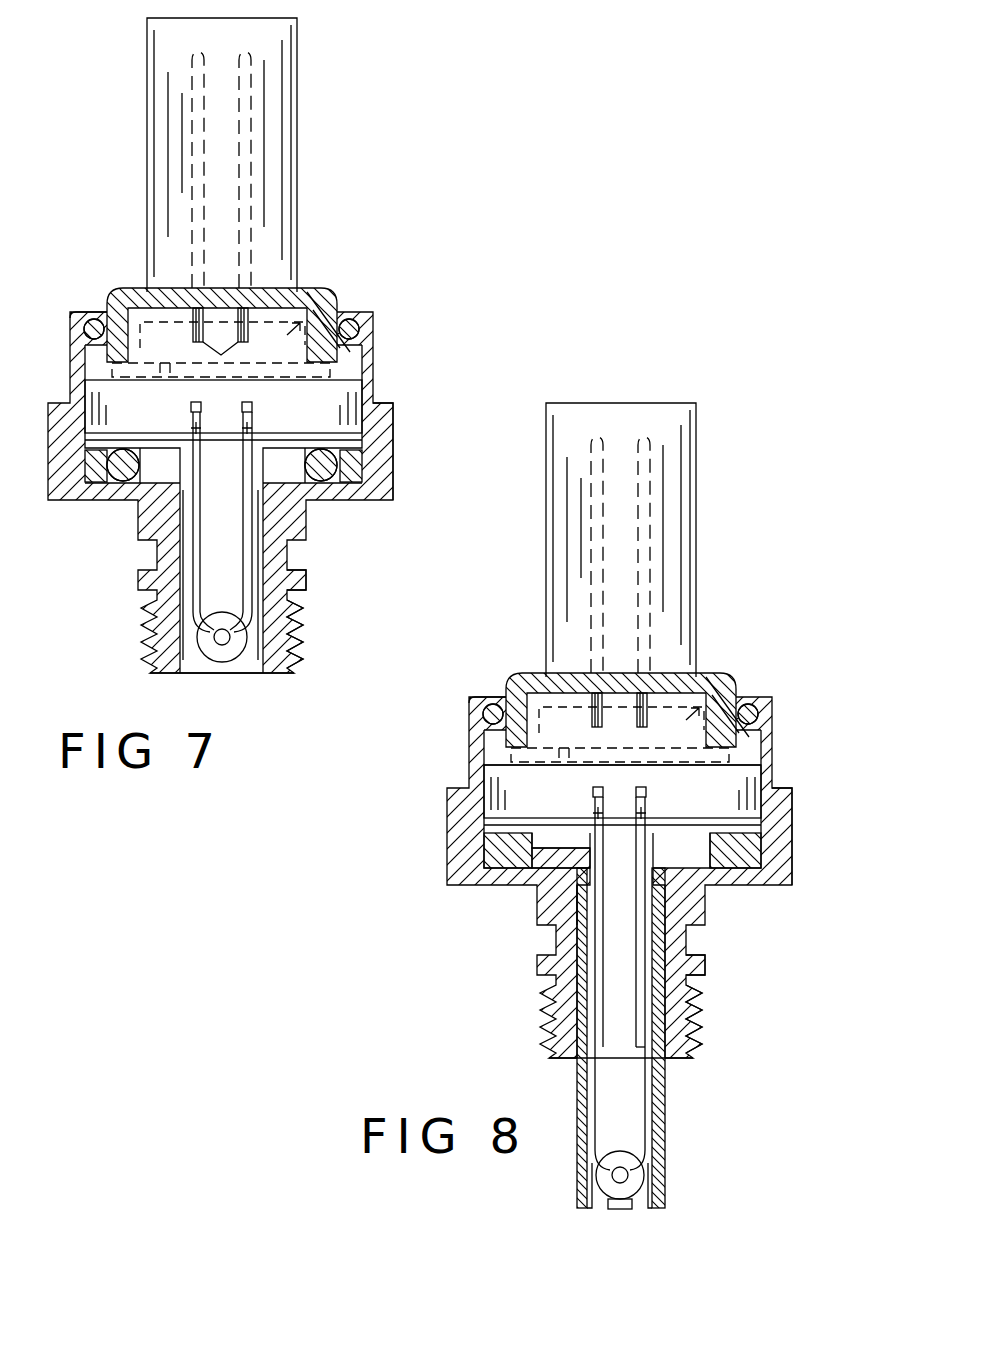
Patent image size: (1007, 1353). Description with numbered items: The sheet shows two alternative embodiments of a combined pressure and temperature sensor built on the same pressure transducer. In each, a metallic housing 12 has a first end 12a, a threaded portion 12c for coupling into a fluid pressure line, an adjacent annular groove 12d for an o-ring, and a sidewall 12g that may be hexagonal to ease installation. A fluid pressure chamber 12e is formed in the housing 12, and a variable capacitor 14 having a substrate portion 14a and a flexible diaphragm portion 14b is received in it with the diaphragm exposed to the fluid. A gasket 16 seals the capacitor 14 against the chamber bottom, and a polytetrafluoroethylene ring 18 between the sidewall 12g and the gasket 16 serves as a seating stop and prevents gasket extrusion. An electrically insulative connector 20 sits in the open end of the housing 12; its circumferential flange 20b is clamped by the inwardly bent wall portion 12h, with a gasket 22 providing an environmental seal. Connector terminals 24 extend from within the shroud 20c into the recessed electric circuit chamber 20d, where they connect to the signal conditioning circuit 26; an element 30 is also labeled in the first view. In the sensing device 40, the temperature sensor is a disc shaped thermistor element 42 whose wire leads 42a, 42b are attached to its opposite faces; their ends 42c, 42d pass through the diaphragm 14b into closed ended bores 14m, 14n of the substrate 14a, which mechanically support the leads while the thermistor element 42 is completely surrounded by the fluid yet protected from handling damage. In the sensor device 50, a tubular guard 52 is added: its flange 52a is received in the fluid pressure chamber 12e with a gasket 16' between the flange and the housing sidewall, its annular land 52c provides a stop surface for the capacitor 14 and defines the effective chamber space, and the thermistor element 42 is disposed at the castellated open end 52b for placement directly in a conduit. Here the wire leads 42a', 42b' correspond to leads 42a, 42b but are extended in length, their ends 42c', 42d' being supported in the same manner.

In FIG. 7, the housing 12 is at (374, 383).
In FIG. 8, the housing 12 is at (776, 768).
In FIG. 7, the first end 12a is at (267, 673).
In FIG. 8, the first end 12a is at (668, 1060).
In FIG. 7, the threaded portion 12c is at (298, 632).
In FIG. 8, the threaded portion 12c is at (695, 1003).
In FIG. 7, the annular groove 12d is at (290, 557).
In FIG. 8, the annular groove 12d is at (692, 942).
In FIG. 8, the fluid pressure chamber 12e is at (508, 840).
In FIG. 7, the sidewall 12g is at (375, 432).
In FIG. 8, the sidewall 12g is at (777, 818).
In FIG. 7, the inwardly bent wall portion 12h is at (77, 323).
In FIG. 8, the inwardly bent wall portion 12h is at (477, 712).
In FIG. 8, the variable capacitor 14 is at (622, 795).
In FIG. 8, the substrate portion 14a is at (515, 798).
In FIG. 8, the flexible diaphragm portion 14b is at (515, 823).
In FIG. 7, the closed ended bore 14m is at (258, 405).
In FIG. 8, the closed ended bore 14m is at (652, 790).
In FIG. 7, the closed ended bore 14n is at (187, 405).
In FIG. 8, the closed ended bore 14n is at (593, 793).
In FIG. 7, the gasket 16 is at (208, 493).
In FIG. 8, the gasket 16 is at (493, 878).
In FIG. 8, the gasket 16' is at (786, 842).
In FIG. 7, the ring 18 is at (347, 468).
In FIG. 7, the connector 20 is at (297, 182).
In FIG. 8, the connector 20 is at (697, 567).
In FIG. 7, the circumferential flange 20b is at (350, 347).
In FIG. 8, the circumferential flange 20b is at (752, 735).
In FIG. 7, the shroud 20c is at (275, 103).
In FIG. 8, the shroud 20c is at (673, 490).
In FIG. 7, the recessed electric circuit chamber 20d is at (313, 313).
In FIG. 8, the recessed electric circuit chamber 20d is at (705, 702).
In FIG. 7, the gasket 22 is at (86, 322).
In FIG. 8, the gasket 22 is at (487, 707).
In FIG. 7, the connector terminals 24 is at (222, 340).
In FIG. 8, the signal conditioning circuit 26 is at (485, 768).
In FIG. 7, the circuit element 30 is at (122, 363).
In FIG. 7, the combined pressure and temperature sensing device 40 is at (388, 213).
In FIG. 7, the thermistor element 42 is at (217, 643).
In FIG. 8, the thermistor element 42 is at (610, 1187).
In FIG. 7, the wire lead 42a is at (298, 522).
In FIG. 8, the wire lead 42a is at (679, 1091).
In FIG. 8, the wire lead 42a' is at (699, 983).
In FIG. 7, the wire lead 42b is at (149, 522).
In FIG. 8, the wire lead 42b' is at (547, 983).
In FIG. 7, the wire lead end 42c is at (277, 419).
In FIG. 8, the lead terminal 42c' is at (674, 805).
In FIG. 7, the wire lead end 42d is at (165, 419).
In FIG. 8, the lead terminal 42d' is at (569, 805).
In FIG. 8, the combined sensor device 50 is at (790, 603).
In FIG. 8, the tubular guard 52 is at (660, 1175).
In FIG. 8, the flange 52a is at (527, 919).
In FIG. 8, the castellated open end 52b is at (627, 1207).
In FIG. 8, the annular land 52c is at (745, 845).